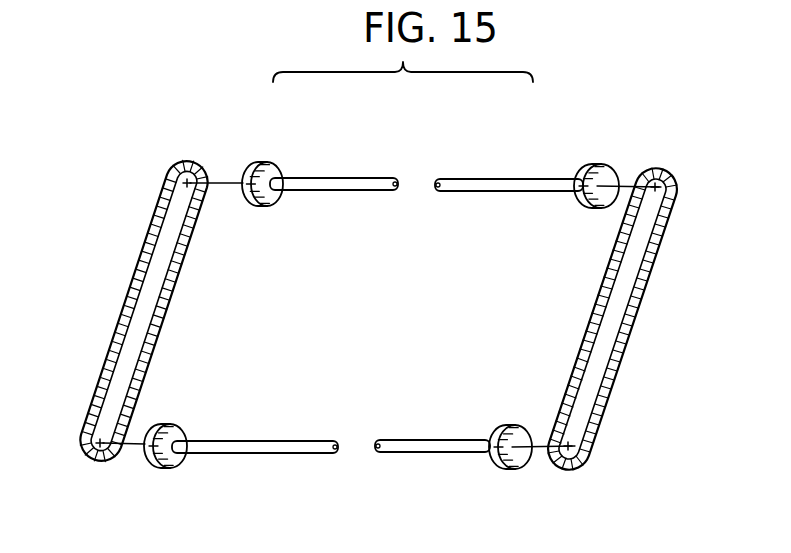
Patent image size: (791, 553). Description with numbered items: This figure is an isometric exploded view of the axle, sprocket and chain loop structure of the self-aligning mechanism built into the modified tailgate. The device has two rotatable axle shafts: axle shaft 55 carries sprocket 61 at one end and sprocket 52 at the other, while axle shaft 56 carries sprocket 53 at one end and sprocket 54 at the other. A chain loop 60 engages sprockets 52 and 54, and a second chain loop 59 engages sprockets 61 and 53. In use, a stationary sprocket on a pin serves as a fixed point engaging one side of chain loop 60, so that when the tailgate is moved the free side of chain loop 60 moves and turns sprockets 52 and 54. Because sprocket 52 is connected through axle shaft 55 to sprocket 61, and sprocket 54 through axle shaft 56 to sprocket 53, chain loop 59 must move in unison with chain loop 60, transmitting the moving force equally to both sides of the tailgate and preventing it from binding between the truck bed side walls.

The sprocket 52 is at (592, 163).
The sprocket 53 is at (175, 425).
The sprocket 54 is at (505, 470).
The axle shaft 55 is at (457, 177).
The axle shaft 56 is at (300, 456).
The chain loop 59 is at (124, 318).
The chain loop 60 is at (631, 333).
The sprocket 61 is at (273, 160).